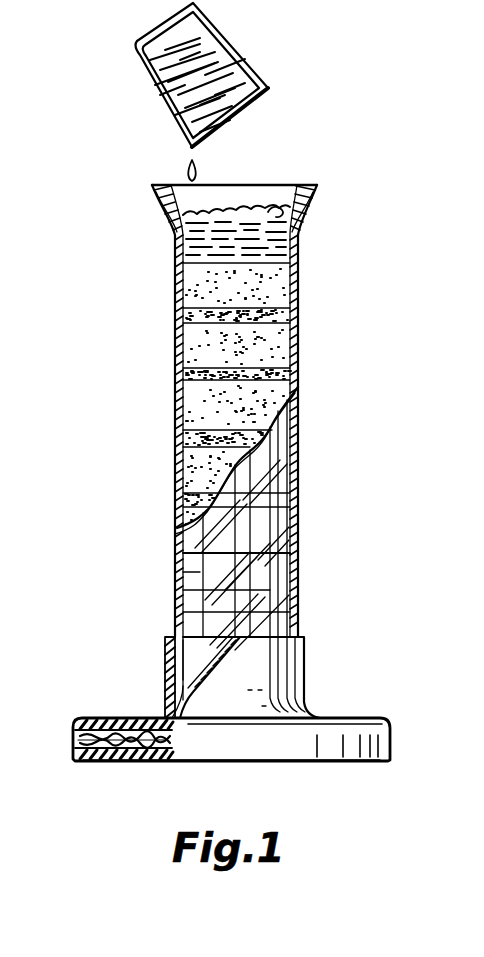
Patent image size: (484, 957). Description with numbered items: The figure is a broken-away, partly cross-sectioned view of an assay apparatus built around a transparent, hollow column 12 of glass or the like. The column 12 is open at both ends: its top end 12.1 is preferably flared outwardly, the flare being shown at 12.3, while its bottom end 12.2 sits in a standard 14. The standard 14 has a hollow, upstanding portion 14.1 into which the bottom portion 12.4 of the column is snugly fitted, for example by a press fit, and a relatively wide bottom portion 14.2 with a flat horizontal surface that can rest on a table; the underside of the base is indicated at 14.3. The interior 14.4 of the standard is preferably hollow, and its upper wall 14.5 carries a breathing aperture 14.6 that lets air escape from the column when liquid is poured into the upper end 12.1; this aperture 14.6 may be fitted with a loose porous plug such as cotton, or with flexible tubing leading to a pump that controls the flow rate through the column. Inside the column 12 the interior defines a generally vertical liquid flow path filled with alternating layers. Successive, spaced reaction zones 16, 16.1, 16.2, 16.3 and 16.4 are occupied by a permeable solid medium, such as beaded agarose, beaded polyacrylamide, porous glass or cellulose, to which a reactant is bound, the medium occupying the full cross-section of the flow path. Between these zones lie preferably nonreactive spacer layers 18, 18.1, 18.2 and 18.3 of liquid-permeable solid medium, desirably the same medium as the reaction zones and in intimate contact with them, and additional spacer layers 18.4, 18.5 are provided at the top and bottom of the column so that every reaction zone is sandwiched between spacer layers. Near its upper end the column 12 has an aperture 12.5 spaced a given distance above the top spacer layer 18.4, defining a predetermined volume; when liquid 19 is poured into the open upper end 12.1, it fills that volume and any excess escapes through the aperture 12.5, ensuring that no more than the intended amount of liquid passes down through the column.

The column 12 is at (300, 412).
The top end of the column 12.1 is at (258, 185).
The bottom end of the column 12.2 is at (197, 682).
The outward flare 12.3 is at (160, 186).
The bottom portion of the column 12.4 is at (195, 642).
The aperture 12.5 is at (302, 210).
The standard 14 is at (306, 692).
The hollow upstanding portion 14.1 is at (305, 645).
The wide bottom portion 14.2 is at (386, 738).
The base bottom 14.3 is at (265, 762).
The interior of the standard 14.4 is at (115, 762).
The upper wall of the standard 14.5 is at (140, 718).
The breathing aperture 14.6 is at (112, 718).
The reaction zone 16 is at (190, 316).
The reaction zone 16.1 is at (190, 374).
The reaction zone 16.2 is at (190, 438).
The reaction zone 16.3 is at (190, 497).
The reaction zone 16.4 is at (190, 559).
The spacer layer 18 is at (192, 348).
The spacer layer 18.1 is at (190, 410).
The spacer layer 18.2 is at (190, 468).
The spacer layer 18.3 is at (183, 515).
The top spacer layer 18.4 is at (193, 288).
The bottom spacer layer 18.5 is at (190, 589).
The liquid 19 is at (273, 245).